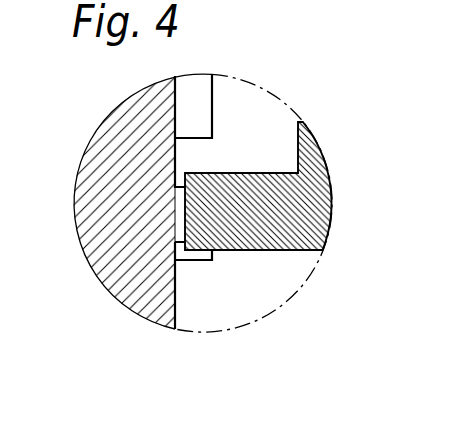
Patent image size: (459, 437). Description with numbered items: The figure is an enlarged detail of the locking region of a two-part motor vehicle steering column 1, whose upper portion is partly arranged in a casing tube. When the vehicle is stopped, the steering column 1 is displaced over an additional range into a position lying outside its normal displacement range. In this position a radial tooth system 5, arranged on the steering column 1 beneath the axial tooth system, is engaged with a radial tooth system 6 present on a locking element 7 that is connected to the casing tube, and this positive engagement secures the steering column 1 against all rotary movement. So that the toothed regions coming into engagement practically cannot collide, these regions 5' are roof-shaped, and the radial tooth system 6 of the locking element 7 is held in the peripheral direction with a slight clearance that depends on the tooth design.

The steering column 1 is at (177, 296).
The radial tooth system 5 is at (258, 147).
The roof-shaped toothed regions 5' is at (283, 172).
The radial tooth system 6 is at (197, 213).
The locking element 7 is at (293, 214).